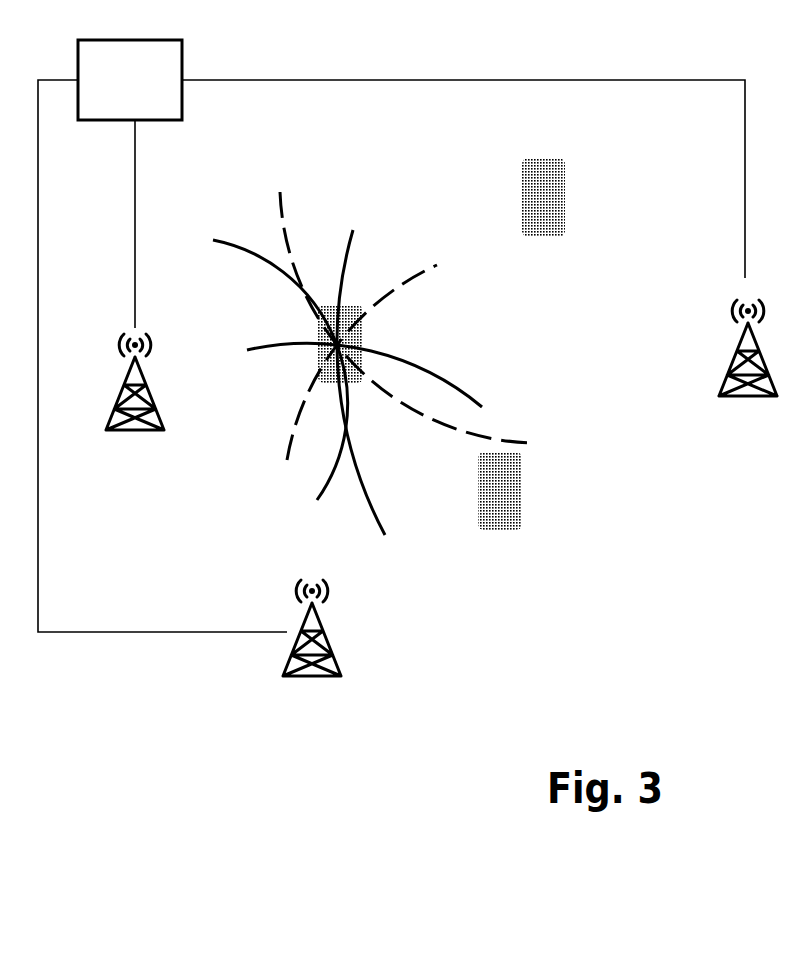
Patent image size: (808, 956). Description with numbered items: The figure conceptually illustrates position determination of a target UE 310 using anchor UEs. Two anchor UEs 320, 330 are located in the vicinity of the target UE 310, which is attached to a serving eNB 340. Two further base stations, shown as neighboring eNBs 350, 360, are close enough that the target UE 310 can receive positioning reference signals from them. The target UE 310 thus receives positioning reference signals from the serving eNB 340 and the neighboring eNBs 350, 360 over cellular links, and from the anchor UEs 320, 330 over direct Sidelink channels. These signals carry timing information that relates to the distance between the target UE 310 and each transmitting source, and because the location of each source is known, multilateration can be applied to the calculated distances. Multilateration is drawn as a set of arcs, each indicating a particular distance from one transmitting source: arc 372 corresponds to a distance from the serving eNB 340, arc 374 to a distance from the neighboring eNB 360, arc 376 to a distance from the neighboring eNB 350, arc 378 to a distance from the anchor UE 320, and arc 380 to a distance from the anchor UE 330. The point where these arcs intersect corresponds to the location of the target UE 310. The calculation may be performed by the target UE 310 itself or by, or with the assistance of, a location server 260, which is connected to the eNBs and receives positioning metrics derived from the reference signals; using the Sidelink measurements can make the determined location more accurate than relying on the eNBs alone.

The location server 260 is at (130, 80).
The target UE 310 is at (313, 333).
The anchor UE 320 is at (521, 164).
The anchor UE 330 is at (473, 481).
The serving eNB 340 is at (118, 381).
The neighboring eNB 350 is at (296, 620).
The neighboring eNB 360 is at (718, 355).
The arc 372 is at (242, 243).
The arc 374 is at (347, 238).
The arc 376 is at (482, 402).
The arc 378 is at (395, 307).
The arc 380 is at (433, 262).